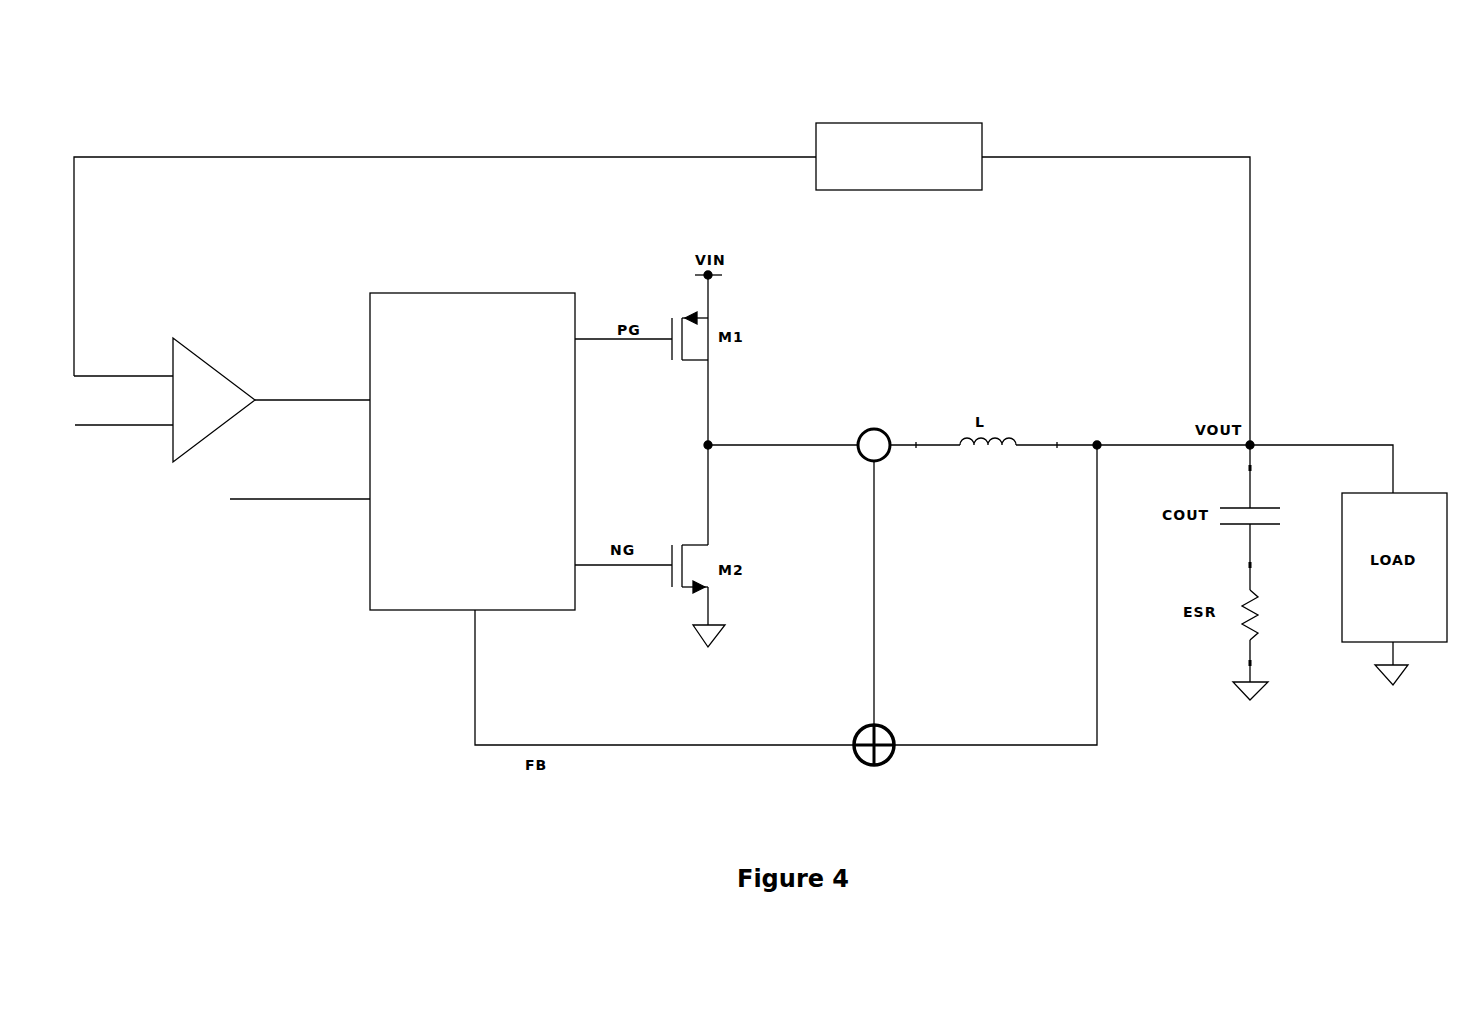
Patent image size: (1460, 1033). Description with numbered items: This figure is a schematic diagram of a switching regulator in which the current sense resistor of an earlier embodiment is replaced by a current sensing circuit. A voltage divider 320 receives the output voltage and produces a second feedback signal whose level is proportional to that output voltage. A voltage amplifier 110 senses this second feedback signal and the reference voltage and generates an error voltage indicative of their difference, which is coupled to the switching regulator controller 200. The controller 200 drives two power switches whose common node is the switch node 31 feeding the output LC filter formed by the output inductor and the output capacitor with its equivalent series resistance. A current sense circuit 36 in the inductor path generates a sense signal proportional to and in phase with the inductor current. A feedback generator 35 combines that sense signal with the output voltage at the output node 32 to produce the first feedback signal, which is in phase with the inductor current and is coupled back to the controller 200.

The voltage amplifier 110 is at (193, 348).
The switching regulator controller 200 is at (402, 451).
The voltage divider 320 is at (980, 143).
The switch node SW 31 is at (757, 447).
The current sense circuit 36 is at (880, 427).
The feedback generator 35 is at (892, 762).
The output node VOUT 32 is at (1367, 442).